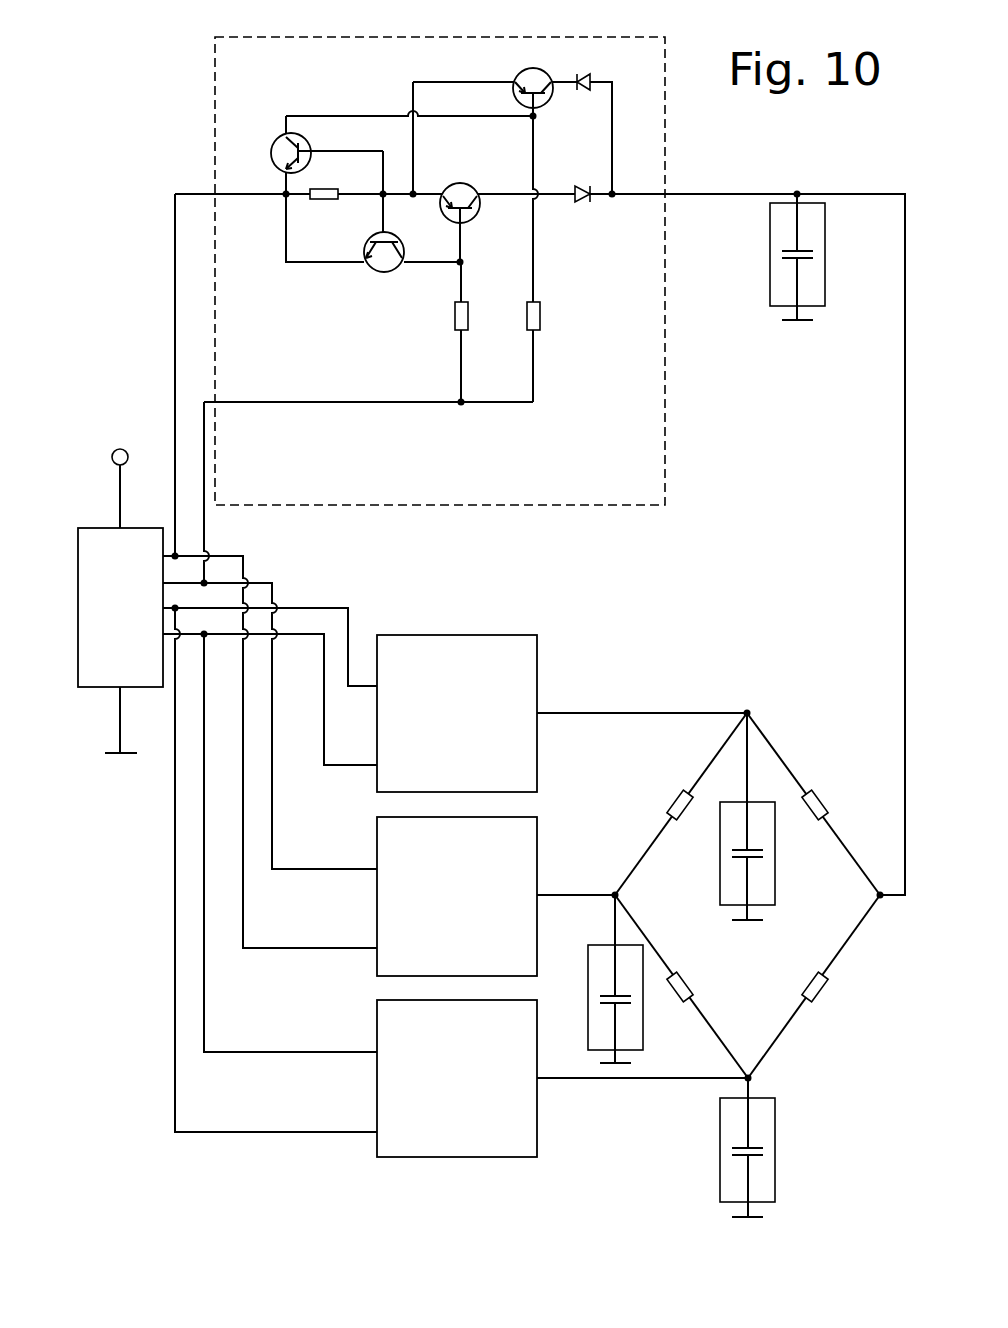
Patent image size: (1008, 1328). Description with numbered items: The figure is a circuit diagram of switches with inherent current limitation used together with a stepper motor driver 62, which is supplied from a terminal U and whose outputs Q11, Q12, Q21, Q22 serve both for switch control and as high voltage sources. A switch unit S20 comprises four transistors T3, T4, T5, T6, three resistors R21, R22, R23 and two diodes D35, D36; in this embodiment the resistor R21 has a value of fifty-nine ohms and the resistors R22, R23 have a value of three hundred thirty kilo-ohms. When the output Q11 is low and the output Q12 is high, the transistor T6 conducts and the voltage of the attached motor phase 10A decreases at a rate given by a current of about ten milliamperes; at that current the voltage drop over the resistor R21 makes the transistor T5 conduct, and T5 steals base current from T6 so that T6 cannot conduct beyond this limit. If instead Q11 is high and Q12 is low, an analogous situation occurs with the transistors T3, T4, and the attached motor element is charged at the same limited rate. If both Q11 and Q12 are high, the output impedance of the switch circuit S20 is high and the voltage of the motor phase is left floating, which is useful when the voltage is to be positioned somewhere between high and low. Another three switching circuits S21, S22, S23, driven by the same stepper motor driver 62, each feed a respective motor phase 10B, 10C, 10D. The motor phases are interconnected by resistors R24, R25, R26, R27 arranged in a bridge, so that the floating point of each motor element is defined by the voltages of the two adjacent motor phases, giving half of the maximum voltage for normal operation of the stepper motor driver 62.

The switch unit S20 is at (440, 271).
The transistor T5 is at (307, 189).
The transistor T6 is at (495, 78).
The transistor T3 is at (477, 222).
The transistor T4 is at (412, 211).
The resistor R21 is at (322, 210).
The resistor R22 is at (431, 332).
The resistor R23 is at (562, 259).
The diode D35 is at (595, 117).
The diode D36 is at (586, 210).
The supply voltage terminal U is at (107, 488).
The stepper motor driver 62 is at (88, 663).
The output Q11 is at (126, 558).
The output Q12 is at (126, 584).
The control output Q21 is at (126, 609).
The control output Q22 is at (126, 635).
The switching circuit S21 is at (457, 713).
The switching circuit S22 is at (457, 896).
The switching circuit S23 is at (457, 1078).
The resistor R24 is at (813, 804).
The resistor R25 is at (681, 804).
The resistor R26 is at (681, 986).
The resistor R27 is at (814, 986).
The motor phase 10A is at (815, 297).
The motor phase 10B is at (765, 897).
The motor phase 10C is at (630, 1037).
The motor phase 10D is at (763, 1190).